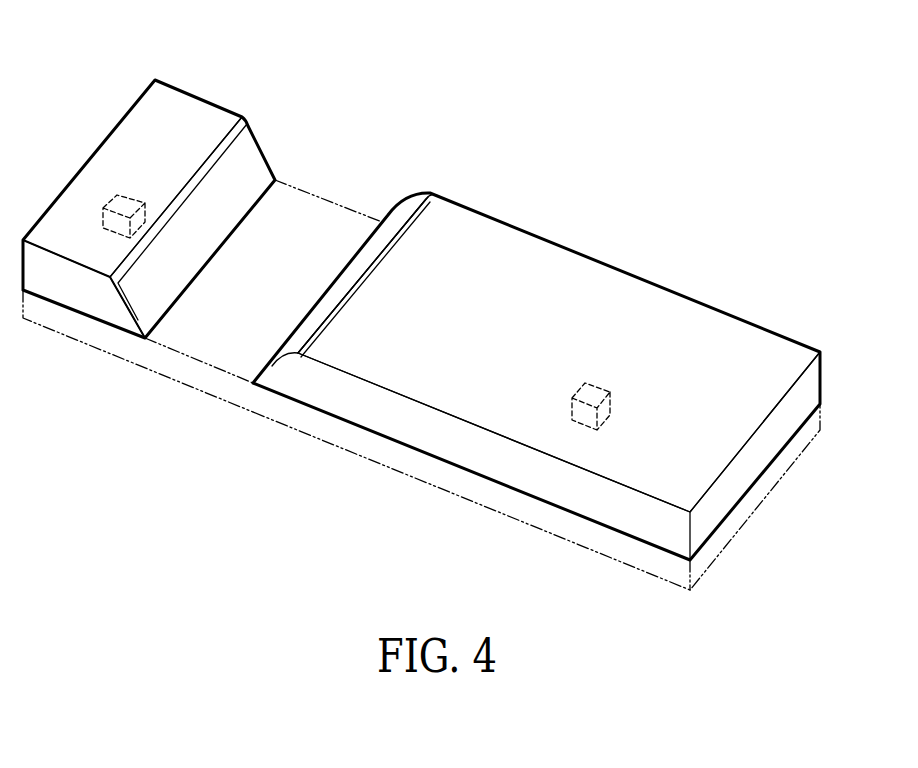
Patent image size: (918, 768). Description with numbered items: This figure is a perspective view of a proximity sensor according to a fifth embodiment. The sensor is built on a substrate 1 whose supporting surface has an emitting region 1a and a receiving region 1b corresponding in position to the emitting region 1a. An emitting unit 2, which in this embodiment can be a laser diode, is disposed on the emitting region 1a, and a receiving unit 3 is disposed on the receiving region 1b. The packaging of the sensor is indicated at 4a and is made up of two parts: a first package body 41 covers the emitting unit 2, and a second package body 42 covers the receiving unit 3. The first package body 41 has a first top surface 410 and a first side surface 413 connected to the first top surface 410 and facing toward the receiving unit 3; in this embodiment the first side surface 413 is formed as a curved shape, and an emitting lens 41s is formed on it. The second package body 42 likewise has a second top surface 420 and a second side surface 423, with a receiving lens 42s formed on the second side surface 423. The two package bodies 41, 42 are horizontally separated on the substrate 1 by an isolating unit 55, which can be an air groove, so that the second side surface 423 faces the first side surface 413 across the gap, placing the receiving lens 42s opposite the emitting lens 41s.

The substrate 1 is at (421, 443).
The emitting region 1a is at (88, 320).
The receiving region 1b is at (447, 467).
The emitting unit 2 is at (113, 193).
The receiving unit 3 is at (607, 390).
The optical assembly 4a is at (500, 120).
The first package body 41 is at (177, 237).
The first top surface 410 is at (148, 128).
The emitting lens 41s is at (267, 152).
The first side surface 413 is at (163, 283).
The second package body 42 is at (519, 337).
The second top surface 420 is at (530, 267).
The receiving lens 42s is at (403, 200).
The second side surface 423 is at (307, 325).
The isolating unit 55 is at (328, 187).